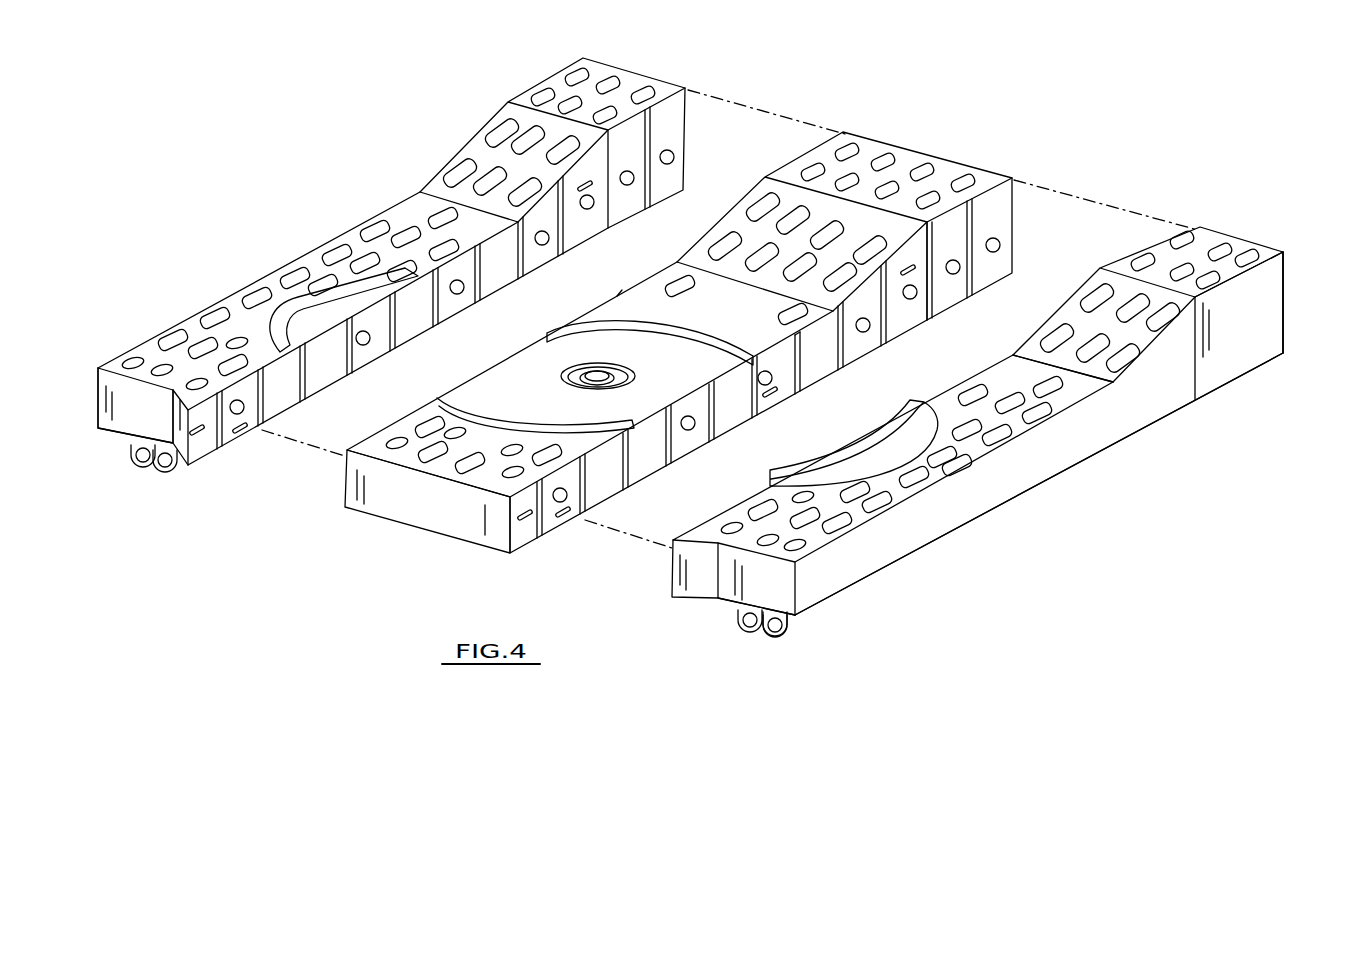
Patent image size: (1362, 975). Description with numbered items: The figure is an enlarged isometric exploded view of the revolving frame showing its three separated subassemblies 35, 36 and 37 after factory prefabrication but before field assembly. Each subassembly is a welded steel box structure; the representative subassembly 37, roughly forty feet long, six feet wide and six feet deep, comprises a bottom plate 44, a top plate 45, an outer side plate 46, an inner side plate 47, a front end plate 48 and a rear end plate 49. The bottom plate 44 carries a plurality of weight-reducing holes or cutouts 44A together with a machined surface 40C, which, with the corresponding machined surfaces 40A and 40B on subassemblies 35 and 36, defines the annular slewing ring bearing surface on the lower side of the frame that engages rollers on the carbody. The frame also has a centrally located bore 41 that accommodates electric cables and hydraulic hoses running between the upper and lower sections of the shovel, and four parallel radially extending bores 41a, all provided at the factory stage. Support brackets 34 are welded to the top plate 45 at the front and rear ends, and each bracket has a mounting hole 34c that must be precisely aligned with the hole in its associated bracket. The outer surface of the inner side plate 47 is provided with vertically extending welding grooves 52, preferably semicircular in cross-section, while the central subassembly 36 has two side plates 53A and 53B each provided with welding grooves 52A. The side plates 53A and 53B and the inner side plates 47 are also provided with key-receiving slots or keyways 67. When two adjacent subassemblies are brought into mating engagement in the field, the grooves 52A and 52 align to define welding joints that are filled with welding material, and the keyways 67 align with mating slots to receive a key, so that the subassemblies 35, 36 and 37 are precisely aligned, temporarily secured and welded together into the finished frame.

The support brackets 34 is at (143, 464).
The mounting hole 34c is at (782, 628).
The subassembly 35 is at (1255, 232).
The subassembly 36 is at (937, 140).
The subassembly 37 is at (676, 72).
The machined surface 40A is at (922, 404).
The machined surface 40B is at (470, 406).
The machined surface 40C is at (285, 306).
The bore 41 is at (613, 374).
The bores 41a is at (237, 342).
The bottom plate 44 is at (996, 372).
The weight-reducing holes 44A is at (608, 82).
The top plate 45 is at (1075, 467).
The outer side plate 46 is at (905, 548).
The inner side plate 47 is at (670, 145).
The front end plate 48 is at (1287, 300).
The rear end plate 49 is at (785, 598).
The welding grooves 52 is at (352, 376).
The welding grooves 52A is at (410, 413).
The side plate 53A is at (820, 372).
The side plate 53B is at (622, 294).
The key-receiving slots 67 is at (590, 200).